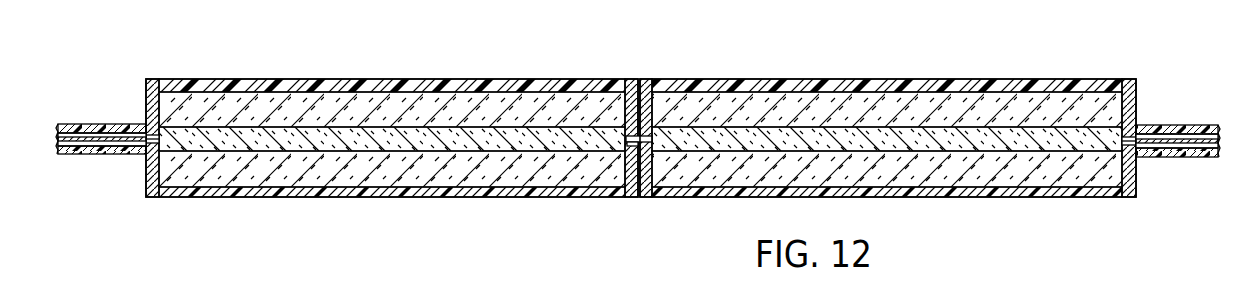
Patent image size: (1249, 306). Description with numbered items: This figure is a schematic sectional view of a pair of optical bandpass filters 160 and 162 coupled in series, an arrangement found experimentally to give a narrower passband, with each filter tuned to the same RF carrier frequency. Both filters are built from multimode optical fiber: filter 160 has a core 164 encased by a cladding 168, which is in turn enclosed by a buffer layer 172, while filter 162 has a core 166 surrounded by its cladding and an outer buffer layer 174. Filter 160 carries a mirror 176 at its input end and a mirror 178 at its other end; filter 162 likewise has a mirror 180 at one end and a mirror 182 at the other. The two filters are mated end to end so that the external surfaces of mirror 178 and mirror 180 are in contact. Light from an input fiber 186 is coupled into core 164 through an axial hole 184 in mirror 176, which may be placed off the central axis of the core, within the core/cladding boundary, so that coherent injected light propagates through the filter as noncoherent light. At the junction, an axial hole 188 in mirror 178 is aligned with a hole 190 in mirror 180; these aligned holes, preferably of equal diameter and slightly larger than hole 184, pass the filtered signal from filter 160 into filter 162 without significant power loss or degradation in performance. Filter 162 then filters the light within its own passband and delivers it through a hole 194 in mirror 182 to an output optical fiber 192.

The optical bandpass filter 160 is at (264, 207).
The optical bandpass filter 162 is at (1065, 211).
The core 164 is at (401, 144).
The core 166 is at (930, 145).
The cladding 168 is at (269, 97).
The buffer layer 172 is at (393, 92).
The buffer layer 174 is at (790, 92).
The mirror 176 is at (147, 80).
The mirror 178 is at (625, 95).
The mirror 180 is at (648, 93).
The mirror 182 is at (1136, 88).
The axial hole 184 is at (147, 152).
The fiber 186 is at (110, 124).
The axial hole 188 is at (627, 156).
The hole 190 is at (631, 146).
The optical fiber 192 is at (1167, 127).
The hole 194 is at (1138, 158).